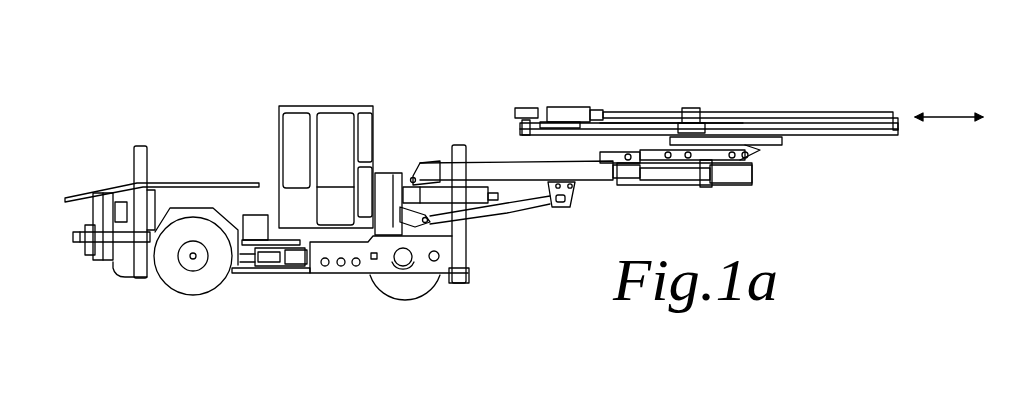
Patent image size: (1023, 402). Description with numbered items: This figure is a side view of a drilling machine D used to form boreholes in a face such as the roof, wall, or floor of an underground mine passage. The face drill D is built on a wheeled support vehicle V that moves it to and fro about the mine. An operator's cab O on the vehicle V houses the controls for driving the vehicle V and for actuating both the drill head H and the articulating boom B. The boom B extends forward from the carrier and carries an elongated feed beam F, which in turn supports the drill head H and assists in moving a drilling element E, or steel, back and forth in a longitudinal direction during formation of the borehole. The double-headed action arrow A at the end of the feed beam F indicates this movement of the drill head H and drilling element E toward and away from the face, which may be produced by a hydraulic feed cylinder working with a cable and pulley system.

The wheeled support vehicle V is at (327, 275).
The operator's cab O is at (324, 106).
The drilling machine D is at (410, 100).
The articulating boom B is at (600, 177).
The feed beam F is at (808, 133).
The drill head H is at (572, 107).
The drilling element E is at (787, 115).
The action arrow A is at (950, 117).